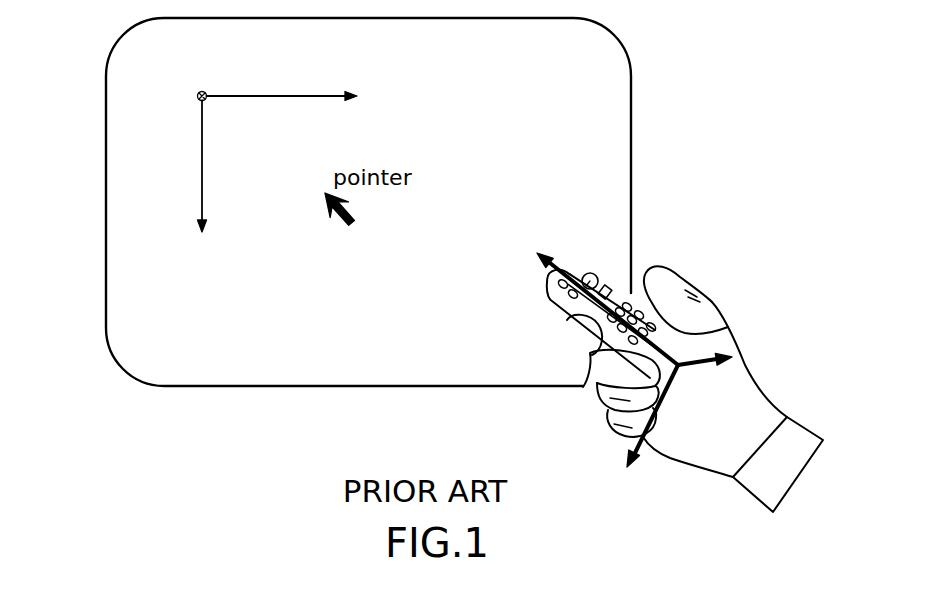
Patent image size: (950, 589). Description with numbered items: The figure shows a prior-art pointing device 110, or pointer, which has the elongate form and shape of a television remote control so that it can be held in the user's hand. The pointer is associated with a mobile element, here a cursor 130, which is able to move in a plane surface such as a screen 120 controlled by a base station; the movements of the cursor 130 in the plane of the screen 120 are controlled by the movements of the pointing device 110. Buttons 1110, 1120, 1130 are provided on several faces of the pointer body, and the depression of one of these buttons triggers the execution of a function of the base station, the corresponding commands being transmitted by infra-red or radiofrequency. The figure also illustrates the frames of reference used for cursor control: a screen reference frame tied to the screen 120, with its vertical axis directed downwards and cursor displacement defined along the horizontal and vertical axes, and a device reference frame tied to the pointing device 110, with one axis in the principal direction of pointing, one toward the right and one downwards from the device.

The pointing device 110 is at (556, 312).
The screen 120 is at (330, 372).
The cursor 130 is at (200, 97).
The button 1110 is at (607, 273).
The button 1120 is at (628, 292).
The button 1130 is at (665, 334).